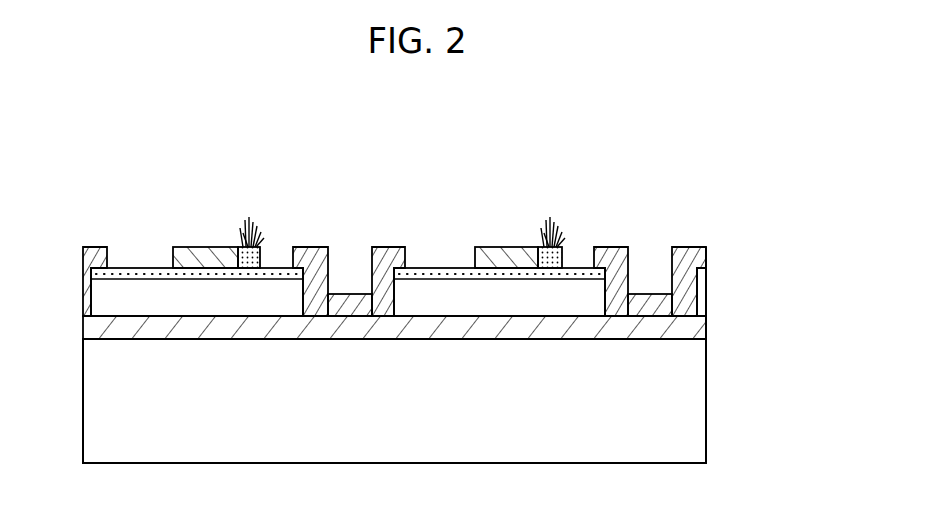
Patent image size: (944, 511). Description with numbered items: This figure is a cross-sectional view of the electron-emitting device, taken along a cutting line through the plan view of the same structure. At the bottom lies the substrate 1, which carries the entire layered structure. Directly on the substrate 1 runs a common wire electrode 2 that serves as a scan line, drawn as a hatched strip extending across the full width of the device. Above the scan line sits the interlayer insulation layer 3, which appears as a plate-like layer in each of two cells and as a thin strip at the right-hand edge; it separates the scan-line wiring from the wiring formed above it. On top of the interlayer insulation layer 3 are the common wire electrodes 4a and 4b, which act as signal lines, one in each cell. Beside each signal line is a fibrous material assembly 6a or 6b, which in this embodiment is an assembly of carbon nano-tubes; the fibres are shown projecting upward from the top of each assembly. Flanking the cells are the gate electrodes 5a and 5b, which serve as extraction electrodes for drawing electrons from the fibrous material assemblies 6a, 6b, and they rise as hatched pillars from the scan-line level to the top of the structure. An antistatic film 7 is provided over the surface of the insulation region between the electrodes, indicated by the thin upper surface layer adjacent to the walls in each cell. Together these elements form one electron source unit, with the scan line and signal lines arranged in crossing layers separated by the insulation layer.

The substrate 1 is at (706, 398).
The common wire electrode (scan line) 2 is at (706, 324).
The interlayer insulation layer 3 is at (135, 296).
The common wire electrode (signal line) 4a is at (190, 252).
The common wire electrode (signal line) 4b is at (493, 252).
The gate electrode (extraction electrode) 5a is at (385, 252).
The gate electrode (extraction electrode) 5b is at (690, 252).
The fibrous material assembly 6a is at (252, 230).
The fibrous material assembly 6b is at (557, 226).
The antistatic film 7 is at (273, 266).